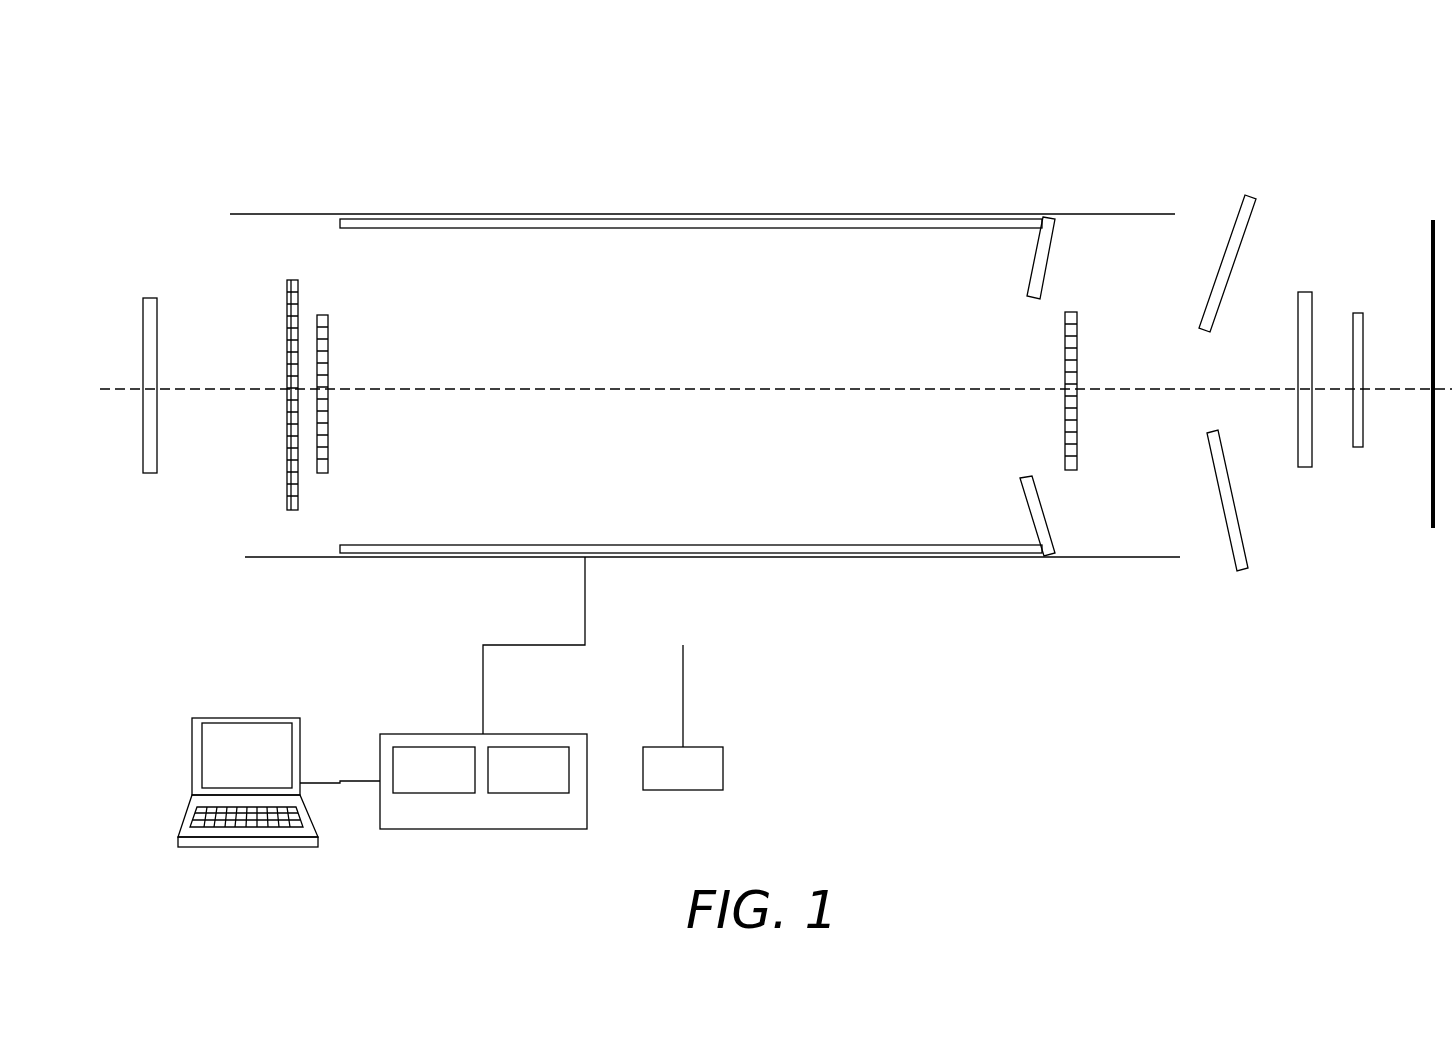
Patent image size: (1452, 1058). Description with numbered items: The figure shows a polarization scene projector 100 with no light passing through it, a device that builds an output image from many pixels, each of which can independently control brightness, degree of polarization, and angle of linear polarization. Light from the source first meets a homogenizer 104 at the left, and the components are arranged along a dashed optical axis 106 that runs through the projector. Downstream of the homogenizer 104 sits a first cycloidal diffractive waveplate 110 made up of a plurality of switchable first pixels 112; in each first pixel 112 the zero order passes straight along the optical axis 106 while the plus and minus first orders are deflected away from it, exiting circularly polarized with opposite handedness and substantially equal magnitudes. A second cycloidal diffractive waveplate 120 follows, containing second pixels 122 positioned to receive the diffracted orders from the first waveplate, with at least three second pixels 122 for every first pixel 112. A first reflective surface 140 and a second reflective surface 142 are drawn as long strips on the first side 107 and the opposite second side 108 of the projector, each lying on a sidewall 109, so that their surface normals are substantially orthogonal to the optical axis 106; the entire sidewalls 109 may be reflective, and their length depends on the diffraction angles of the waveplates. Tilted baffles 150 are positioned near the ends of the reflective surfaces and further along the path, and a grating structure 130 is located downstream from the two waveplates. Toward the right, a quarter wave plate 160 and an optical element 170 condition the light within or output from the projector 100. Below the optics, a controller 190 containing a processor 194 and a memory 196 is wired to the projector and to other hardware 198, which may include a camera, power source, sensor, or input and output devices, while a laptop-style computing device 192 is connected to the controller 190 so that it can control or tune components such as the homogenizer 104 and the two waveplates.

The polarization scene projector 100 is at (304, 96).
The homogenizer 104 is at (151, 474).
The optical axis 106 is at (495, 384).
The first side 107 is at (822, 184).
The second side 108 is at (832, 572).
The sidewall 109 is at (1085, 212).
The first cycloidal diffractive waveplate 110 is at (231, 454).
The first pixel 112 is at (284, 305).
The second cycloidal diffractive waveplate 120 is at (362, 489).
The second pixel 122 is at (322, 337).
The grating structure 130 is at (1072, 471).
The first reflective surface 140 is at (680, 229).
The second reflective surface 142 is at (658, 543).
The baffle 150 is at (1052, 252).
The quarter wave plate 160 is at (1305, 468).
The optical element 170 is at (1358, 448).
The controller 190 is at (491, 693).
The computing device 192 is at (190, 735).
The processor 194 is at (414, 784).
The memory 196 is at (508, 784).
The other hardware 198 is at (663, 784).